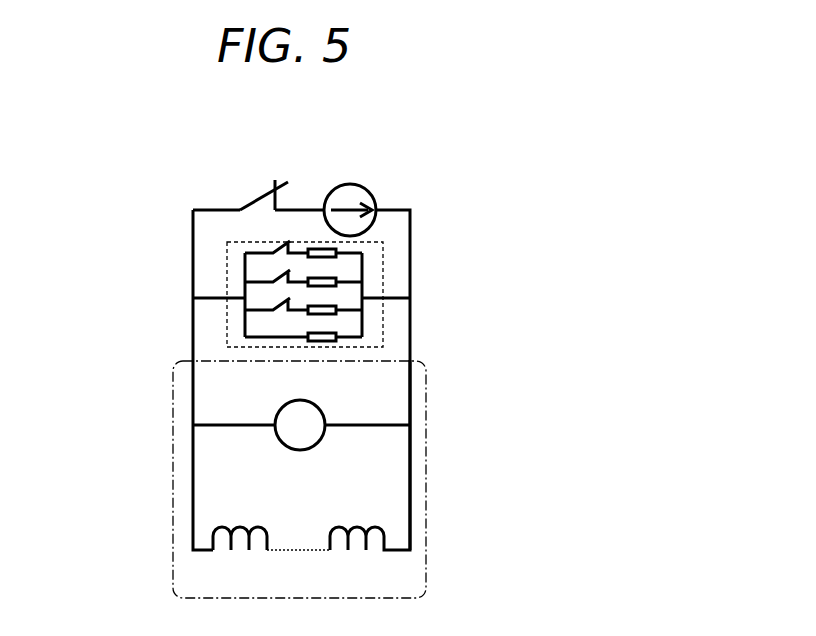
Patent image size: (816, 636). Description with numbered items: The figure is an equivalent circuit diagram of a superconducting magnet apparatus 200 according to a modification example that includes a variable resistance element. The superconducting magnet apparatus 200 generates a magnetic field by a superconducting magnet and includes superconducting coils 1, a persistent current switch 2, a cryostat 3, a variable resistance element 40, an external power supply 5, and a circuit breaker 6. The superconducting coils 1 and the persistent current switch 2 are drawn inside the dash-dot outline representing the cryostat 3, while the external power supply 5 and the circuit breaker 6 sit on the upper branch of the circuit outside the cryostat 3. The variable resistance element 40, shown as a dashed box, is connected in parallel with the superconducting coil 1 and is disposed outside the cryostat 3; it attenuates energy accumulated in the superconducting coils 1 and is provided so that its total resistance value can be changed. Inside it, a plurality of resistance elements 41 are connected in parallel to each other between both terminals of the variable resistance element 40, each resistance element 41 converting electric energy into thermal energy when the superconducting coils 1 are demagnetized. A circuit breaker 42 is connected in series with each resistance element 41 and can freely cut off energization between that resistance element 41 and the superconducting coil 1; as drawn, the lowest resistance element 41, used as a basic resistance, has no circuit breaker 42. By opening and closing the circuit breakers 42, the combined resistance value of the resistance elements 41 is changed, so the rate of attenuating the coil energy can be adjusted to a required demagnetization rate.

The superconducting coil 1 is at (372, 524).
The persistent current switch 2 is at (314, 405).
The cryostat 3 is at (426, 456).
The external power supply 5 is at (354, 186).
The circuit breaker 6 is at (256, 196).
The variable resistance element 40 is at (384, 281).
The resistance element 41 is at (340, 250).
The circuit breaker 42 is at (272, 250).
The superconducting magnet apparatus 200 is at (128, 384).